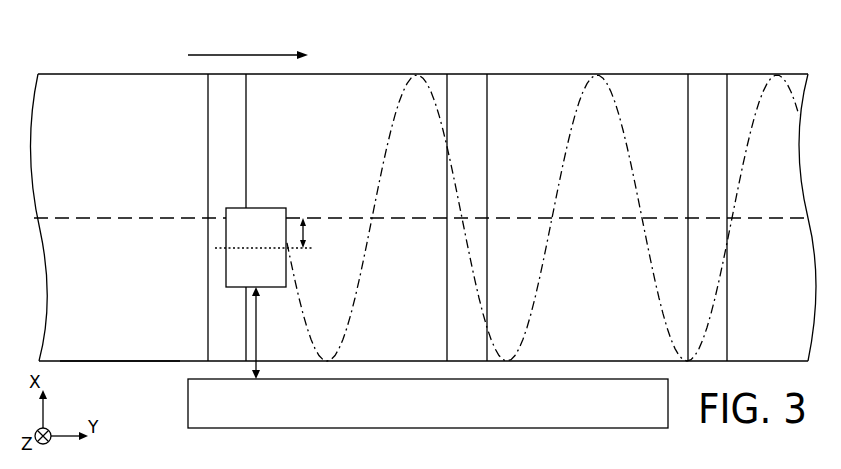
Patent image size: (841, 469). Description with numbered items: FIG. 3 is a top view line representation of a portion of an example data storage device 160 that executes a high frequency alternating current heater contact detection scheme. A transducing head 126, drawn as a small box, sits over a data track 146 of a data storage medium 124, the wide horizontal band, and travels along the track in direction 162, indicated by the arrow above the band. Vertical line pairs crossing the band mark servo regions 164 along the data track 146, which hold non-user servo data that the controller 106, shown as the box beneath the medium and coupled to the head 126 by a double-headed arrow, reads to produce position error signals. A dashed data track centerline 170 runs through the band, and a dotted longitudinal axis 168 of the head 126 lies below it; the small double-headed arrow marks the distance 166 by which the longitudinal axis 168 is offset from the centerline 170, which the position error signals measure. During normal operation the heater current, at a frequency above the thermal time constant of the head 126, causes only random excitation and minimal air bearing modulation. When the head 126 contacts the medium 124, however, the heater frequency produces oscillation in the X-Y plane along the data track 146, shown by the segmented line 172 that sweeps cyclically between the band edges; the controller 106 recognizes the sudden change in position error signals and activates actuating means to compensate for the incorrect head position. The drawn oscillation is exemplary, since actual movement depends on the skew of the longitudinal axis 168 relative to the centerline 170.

The controller 106 is at (655, 411).
The data storage medium 124 is at (43, 74).
The transducing head 126 is at (262, 208).
The data track 146 is at (141, 368).
The data storage device 160 is at (750, 57).
The direction 162 is at (232, 55).
The servo regions 164 is at (202, 88).
The distance 166 is at (321, 233).
The longitudinal axis 168 is at (243, 249).
The data track centerline 170 is at (146, 216).
The segmented line 172 is at (381, 157).